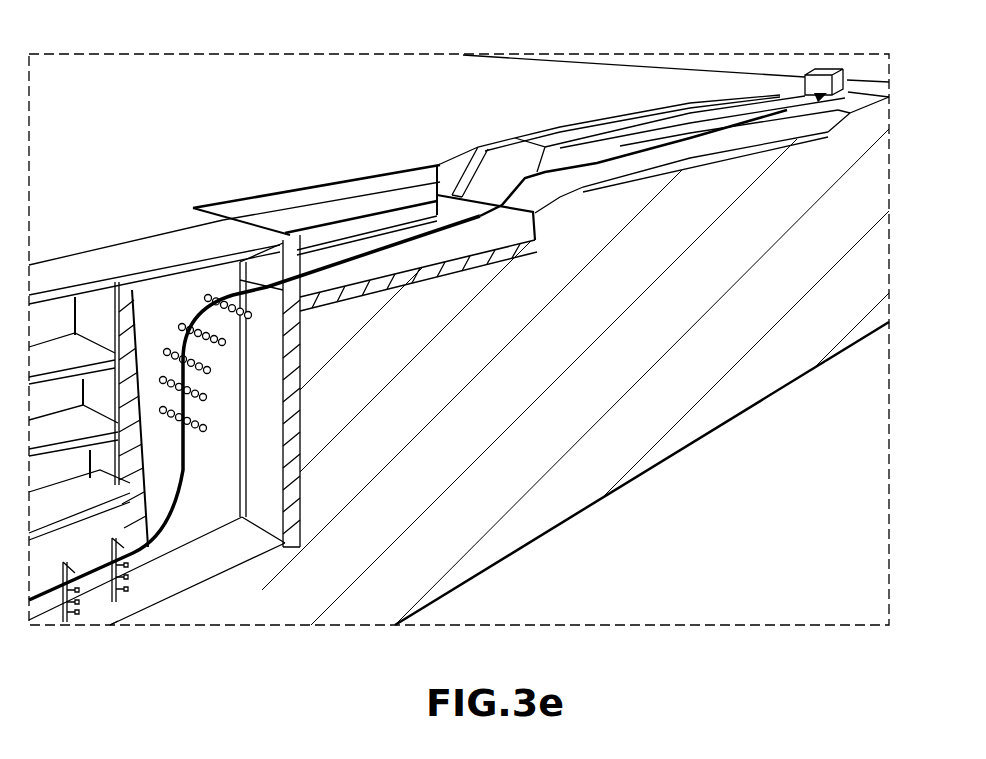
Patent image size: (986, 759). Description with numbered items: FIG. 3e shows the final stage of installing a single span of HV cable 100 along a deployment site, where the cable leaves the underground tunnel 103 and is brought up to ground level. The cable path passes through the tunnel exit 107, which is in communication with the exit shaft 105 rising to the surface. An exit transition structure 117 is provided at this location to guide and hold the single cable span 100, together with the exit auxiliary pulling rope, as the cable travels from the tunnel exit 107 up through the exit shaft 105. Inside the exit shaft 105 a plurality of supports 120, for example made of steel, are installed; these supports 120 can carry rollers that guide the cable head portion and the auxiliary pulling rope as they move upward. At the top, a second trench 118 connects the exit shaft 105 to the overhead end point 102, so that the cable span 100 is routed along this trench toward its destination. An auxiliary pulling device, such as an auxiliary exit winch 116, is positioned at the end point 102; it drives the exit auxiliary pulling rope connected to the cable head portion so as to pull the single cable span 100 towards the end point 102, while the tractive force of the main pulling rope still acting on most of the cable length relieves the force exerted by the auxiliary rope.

The HV cable 100 is at (165, 520).
The end point 102 is at (855, 90).
The tunnel 103 is at (82, 556).
The exit shaft 105 is at (200, 293).
The tunnel exit 107 is at (148, 592).
The auxiliary exit winch 116 is at (818, 82).
The exit transition structure 117 is at (160, 328).
The second trench 118 is at (590, 150).
The supports 120 is at (183, 322).